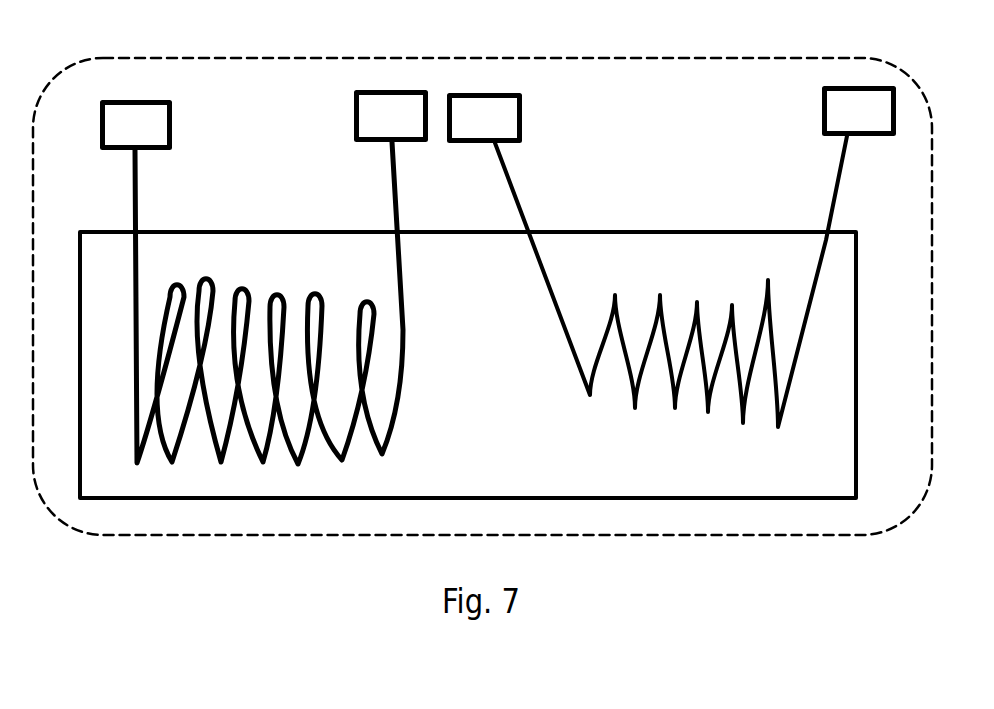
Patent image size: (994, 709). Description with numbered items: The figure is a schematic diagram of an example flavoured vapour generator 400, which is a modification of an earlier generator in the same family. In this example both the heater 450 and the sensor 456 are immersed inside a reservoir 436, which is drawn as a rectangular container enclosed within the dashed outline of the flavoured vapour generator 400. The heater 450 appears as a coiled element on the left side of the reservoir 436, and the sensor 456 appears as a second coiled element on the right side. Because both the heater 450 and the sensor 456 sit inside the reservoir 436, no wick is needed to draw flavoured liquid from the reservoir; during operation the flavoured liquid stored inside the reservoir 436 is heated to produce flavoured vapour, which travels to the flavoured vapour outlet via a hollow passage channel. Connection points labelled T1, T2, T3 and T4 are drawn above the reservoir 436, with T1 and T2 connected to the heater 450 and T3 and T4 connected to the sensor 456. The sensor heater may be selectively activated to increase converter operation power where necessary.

The flavoured vapour generator 400 is at (710, 44).
The reservoir 436 is at (468, 365).
The heater 450 is at (265, 270).
The sensor 456 is at (690, 271).
The first terminal T1 is at (136, 125).
The second terminal T2 is at (391, 116).
The third terminal T3 is at (485, 118).
The fourth terminal T4 is at (859, 111).